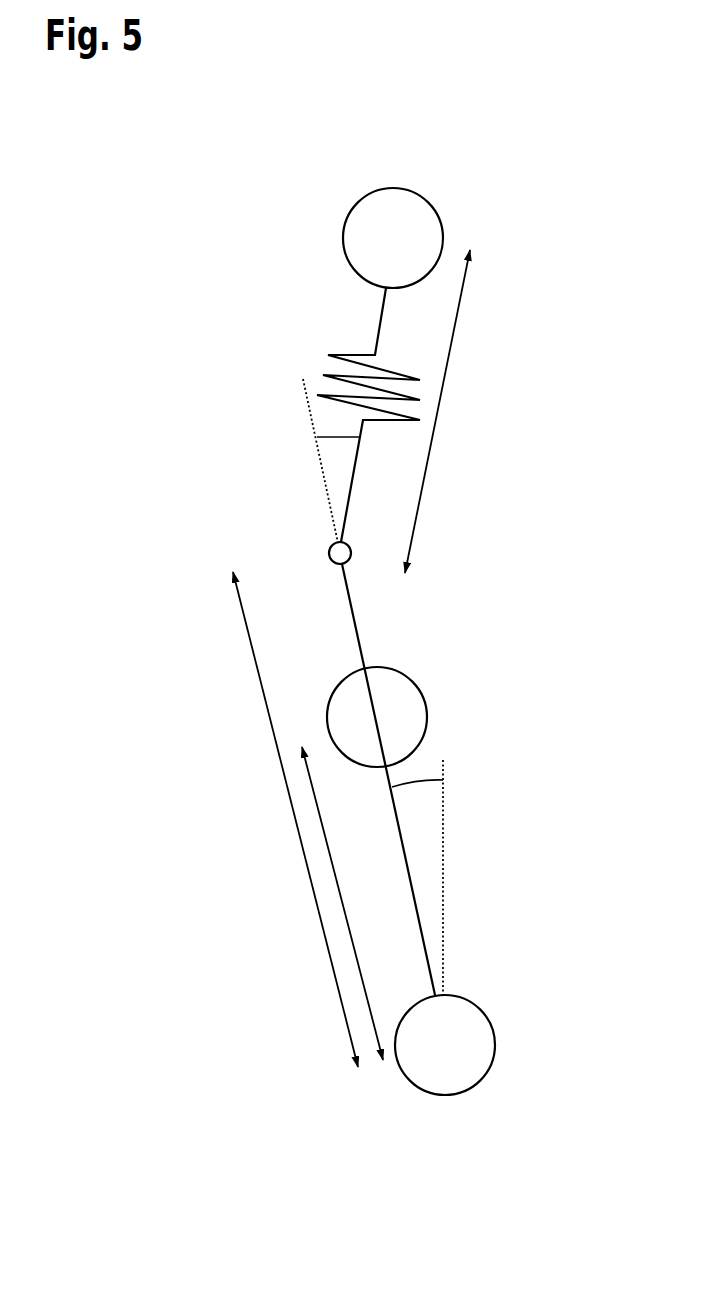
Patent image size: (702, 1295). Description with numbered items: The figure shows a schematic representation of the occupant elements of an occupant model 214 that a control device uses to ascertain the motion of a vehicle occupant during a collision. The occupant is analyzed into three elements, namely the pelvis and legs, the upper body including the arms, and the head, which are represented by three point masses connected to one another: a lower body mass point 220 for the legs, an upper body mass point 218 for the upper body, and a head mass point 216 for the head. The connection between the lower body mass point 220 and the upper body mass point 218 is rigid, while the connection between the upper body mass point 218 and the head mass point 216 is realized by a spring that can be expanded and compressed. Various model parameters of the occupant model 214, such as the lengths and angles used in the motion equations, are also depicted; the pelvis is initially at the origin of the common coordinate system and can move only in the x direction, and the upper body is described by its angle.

The occupant model 214 is at (266, 256).
The head mass point 216 is at (440, 220).
The upper body mass point 218 is at (425, 703).
The lower body mass point 220 is at (483, 1010).